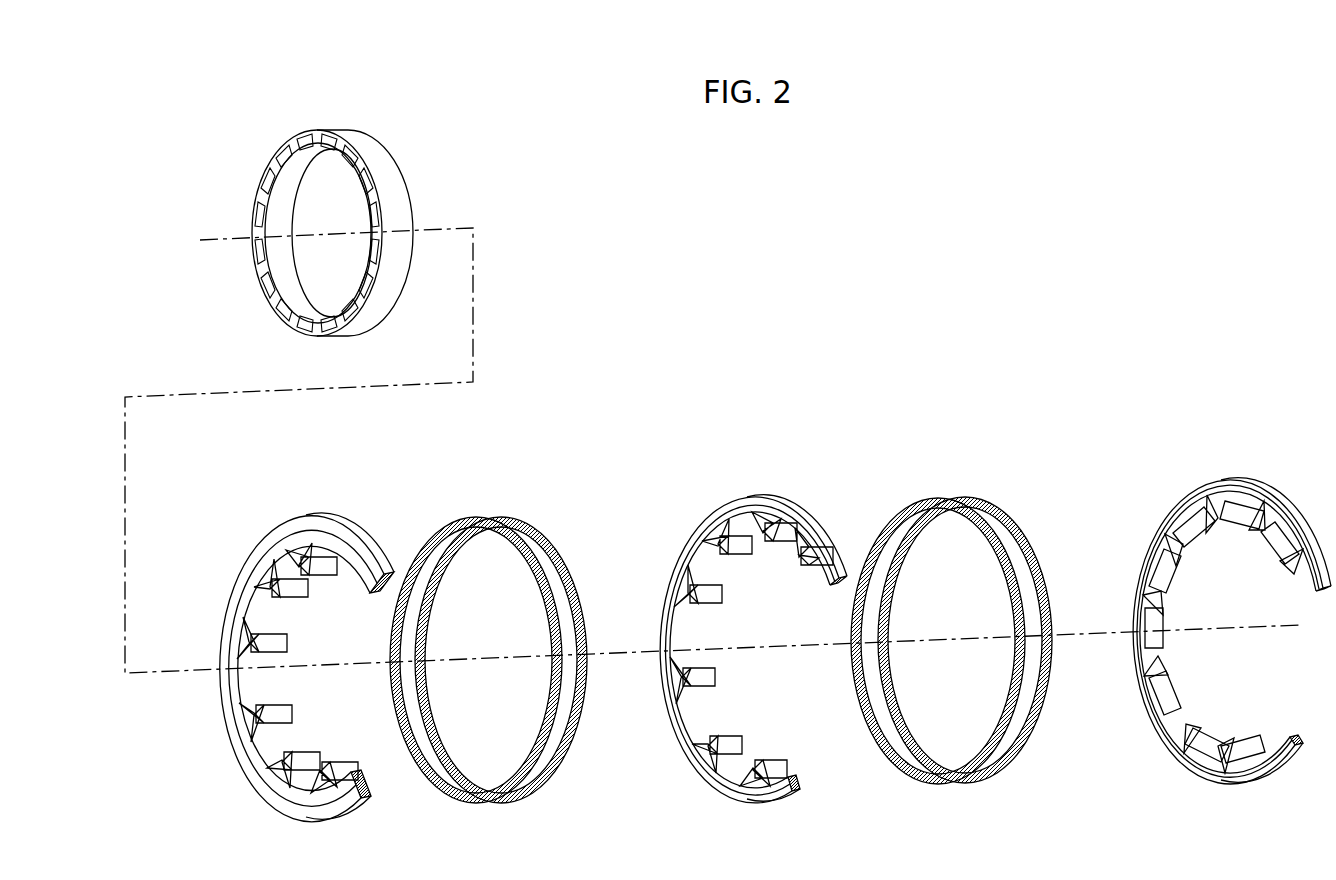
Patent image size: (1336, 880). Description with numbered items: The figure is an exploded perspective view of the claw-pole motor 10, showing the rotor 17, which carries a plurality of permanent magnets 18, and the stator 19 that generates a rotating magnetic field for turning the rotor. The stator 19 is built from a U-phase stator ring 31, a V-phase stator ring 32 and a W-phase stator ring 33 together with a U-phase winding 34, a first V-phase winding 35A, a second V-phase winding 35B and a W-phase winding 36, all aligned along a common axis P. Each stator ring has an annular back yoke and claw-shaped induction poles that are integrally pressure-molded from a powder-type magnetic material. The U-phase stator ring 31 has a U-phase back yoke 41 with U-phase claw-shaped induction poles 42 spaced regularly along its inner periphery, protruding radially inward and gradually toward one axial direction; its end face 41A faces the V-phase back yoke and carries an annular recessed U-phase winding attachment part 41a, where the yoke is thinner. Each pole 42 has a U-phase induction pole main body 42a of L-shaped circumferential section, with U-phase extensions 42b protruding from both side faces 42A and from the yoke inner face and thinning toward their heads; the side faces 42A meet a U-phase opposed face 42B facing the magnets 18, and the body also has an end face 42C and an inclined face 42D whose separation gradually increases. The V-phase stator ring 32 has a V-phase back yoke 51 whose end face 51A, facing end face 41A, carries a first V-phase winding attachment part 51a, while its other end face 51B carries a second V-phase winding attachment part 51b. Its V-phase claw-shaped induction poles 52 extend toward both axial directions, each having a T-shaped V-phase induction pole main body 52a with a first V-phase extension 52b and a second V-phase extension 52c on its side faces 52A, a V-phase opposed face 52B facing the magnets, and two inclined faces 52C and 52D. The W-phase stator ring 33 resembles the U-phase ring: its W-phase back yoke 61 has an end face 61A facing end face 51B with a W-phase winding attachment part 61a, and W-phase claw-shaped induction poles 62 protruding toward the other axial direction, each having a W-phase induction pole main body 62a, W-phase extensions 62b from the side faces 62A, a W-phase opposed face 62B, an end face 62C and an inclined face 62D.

The claw-pole motor 10 is at (292, 203).
The rotor 17 is at (316, 131).
The permanent magnets 18 is at (255, 218).
The stator 19 is at (734, 579).
The U-phase stator ring 31 is at (292, 652).
The V-phase stator ring 32 is at (717, 620).
The W-phase stator ring 33 is at (1190, 608).
The U-phase winding 34 is at (455, 515).
The first V-phase winding 35A is at (522, 513).
The second V-phase winding 35B is at (900, 505).
The W-phase winding 36 is at (975, 497).
The U-phase back yoke 41 is at (333, 667).
The U-phase winding attachment part 41a is at (382, 793).
The end face of U-phase back yoke 41A is at (366, 805).
The U-phase claw-shaped induction poles 42 is at (251, 680).
The U-phase induction pole main body 42a is at (260, 632).
The U-phase extensions 42b is at (248, 660).
The side faces of U-phase induction pole main body 42A is at (262, 750).
The U-phase opposed face 42B is at (283, 715).
The end face of U-phase induction pole main body 42C is at (250, 716).
The inclined face of U-phase induction pole main body 42D is at (285, 737).
The V-phase back yoke 51 is at (739, 643).
The end face of V-phase back yoke 51A is at (700, 522).
The first V-phase winding attachment part 51a is at (700, 548).
The second V-phase winding attachment part 51b is at (783, 786).
The other end face of V-phase back yoke 51B is at (795, 798).
The V-phase claw-shaped induction poles 52 is at (705, 649).
The V-phase induction pole main body 52a is at (695, 596).
The first V-phase extension 52b is at (695, 618).
The second V-phase extension 52c is at (700, 572).
The side faces of V-phase induction pole main body 52A is at (692, 710).
The V-phase opposed face 52B is at (690, 696).
The inclined face of V-phase induction pole main body 52C is at (680, 676).
The other inclined face of V-phase induction pole main body 52D is at (714, 674).
The W-phase back yoke 61 is at (1232, 627).
The W-phase winding attachment part 61a is at (1262, 765).
The end face of W-phase back yoke 61A is at (1288, 755).
The W-phase claw-shaped induction poles 62 is at (1176, 646).
The W-phase induction pole main body 62a is at (1158, 590).
The W-phase extensions 62b is at (1156, 620).
The side faces of W-phase induction pole main body 62A is at (1160, 735).
The W-phase opposed face 62B is at (1175, 714).
The end face of W-phase induction pole main body 62C is at (1188, 692).
The inclined face of W-phase induction pole main body 62D is at (1150, 698).
The axis P is at (142, 678).